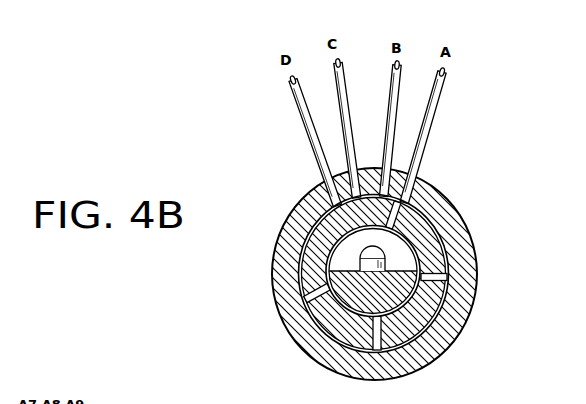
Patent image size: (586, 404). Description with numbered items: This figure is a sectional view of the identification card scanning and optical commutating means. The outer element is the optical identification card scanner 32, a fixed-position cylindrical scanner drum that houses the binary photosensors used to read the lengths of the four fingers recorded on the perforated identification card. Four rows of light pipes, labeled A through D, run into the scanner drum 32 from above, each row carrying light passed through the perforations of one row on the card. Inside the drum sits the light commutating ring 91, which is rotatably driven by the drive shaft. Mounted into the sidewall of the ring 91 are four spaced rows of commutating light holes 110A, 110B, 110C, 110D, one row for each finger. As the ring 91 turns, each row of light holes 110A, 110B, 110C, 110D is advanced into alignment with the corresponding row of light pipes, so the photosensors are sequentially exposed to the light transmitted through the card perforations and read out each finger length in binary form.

The optical identification card scanner 32 is at (300, 203).
The light commutating ring 91 is at (310, 260).
The commutating light holes 110A is at (392, 214).
The commutating light holes 110B is at (432, 279).
The commutating light holes 110C is at (380, 342).
The commutating light holes 110D is at (318, 299).